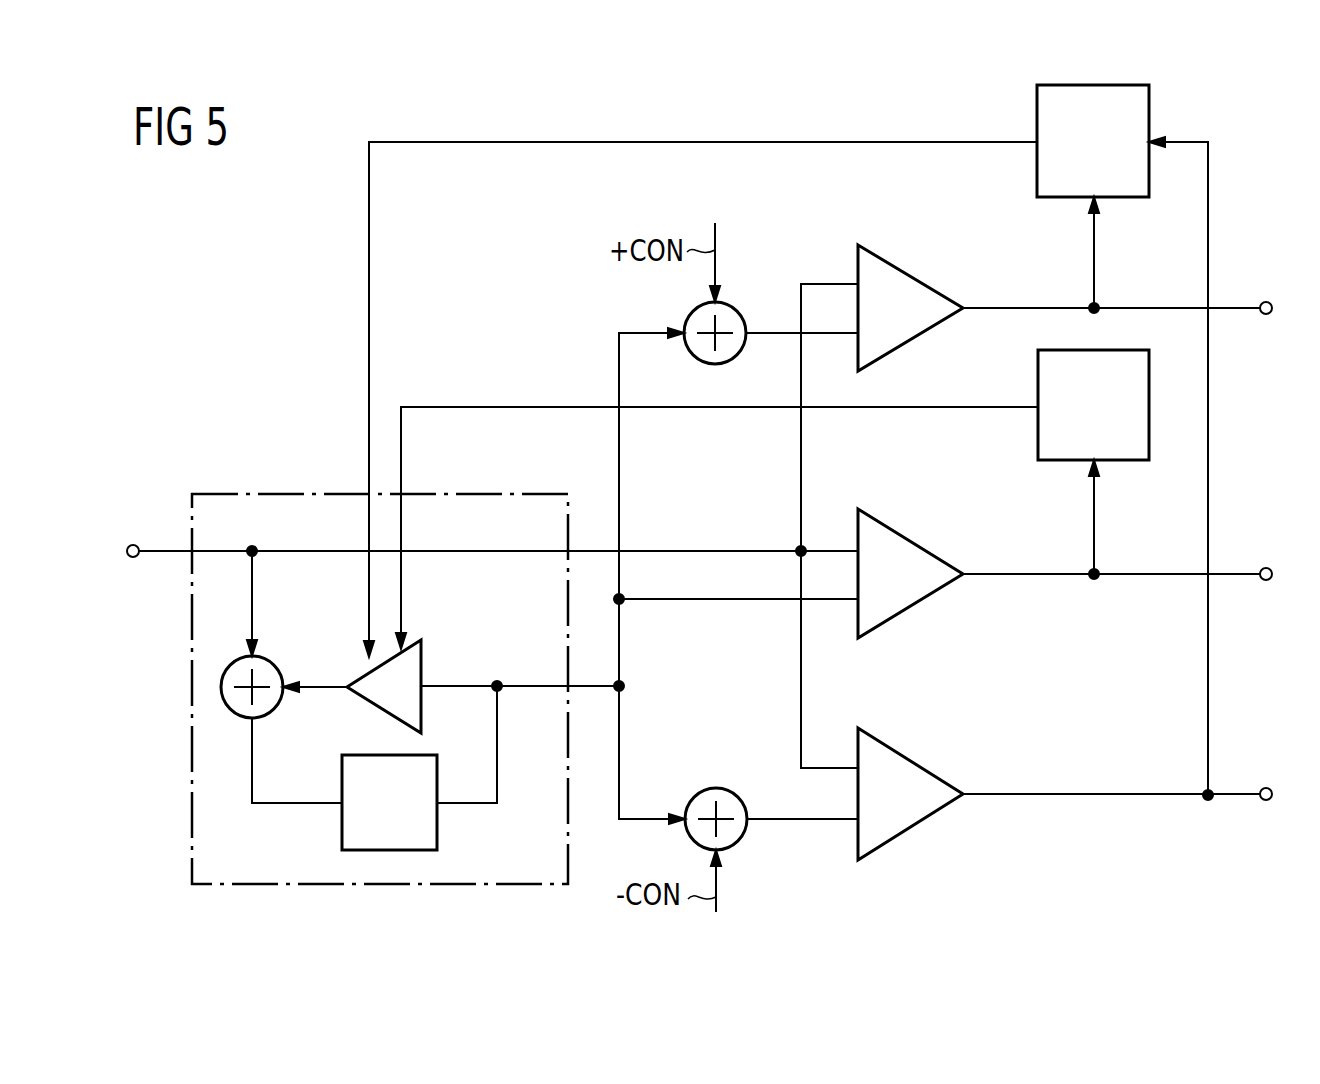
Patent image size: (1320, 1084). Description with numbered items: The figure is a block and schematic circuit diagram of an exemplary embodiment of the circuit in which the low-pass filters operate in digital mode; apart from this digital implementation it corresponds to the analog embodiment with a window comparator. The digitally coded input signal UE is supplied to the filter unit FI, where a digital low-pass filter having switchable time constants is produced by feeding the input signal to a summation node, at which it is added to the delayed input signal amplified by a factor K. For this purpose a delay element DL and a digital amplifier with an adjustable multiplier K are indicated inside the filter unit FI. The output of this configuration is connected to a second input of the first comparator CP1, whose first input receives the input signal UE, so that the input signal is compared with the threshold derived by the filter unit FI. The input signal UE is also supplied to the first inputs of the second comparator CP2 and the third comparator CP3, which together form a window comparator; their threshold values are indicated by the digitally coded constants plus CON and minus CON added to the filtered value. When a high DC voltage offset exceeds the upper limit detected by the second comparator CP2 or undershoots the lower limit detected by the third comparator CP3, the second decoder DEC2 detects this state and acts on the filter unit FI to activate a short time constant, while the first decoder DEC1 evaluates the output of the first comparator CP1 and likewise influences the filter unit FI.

The filter unit FI is at (380, 649).
The delay element DL is at (389, 802).
The adjustable multiplier K is at (384, 686).
The first comparator CP1 is at (890, 524).
The second comparator CP2 is at (890, 258).
The third comparator CP3 is at (890, 744).
The first decoder DEC1 is at (1093, 464).
The second decoder DEC2 is at (1093, 199).
The input signal UE is at (755, 549).